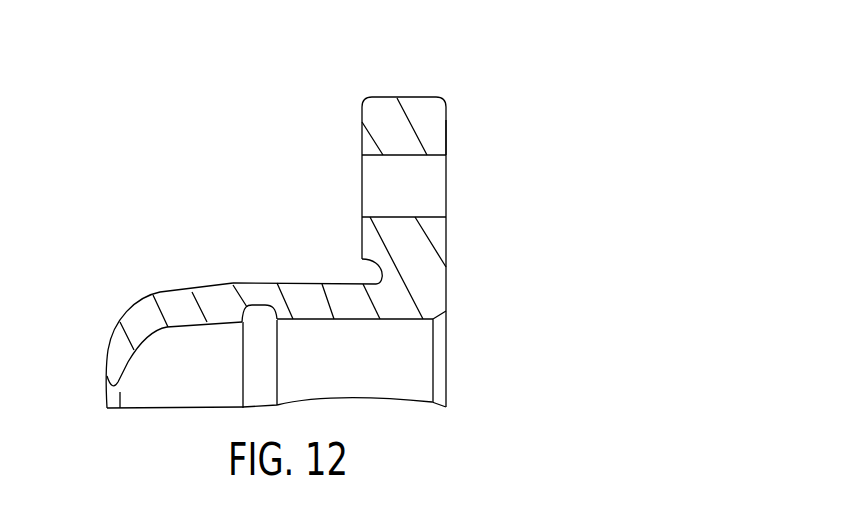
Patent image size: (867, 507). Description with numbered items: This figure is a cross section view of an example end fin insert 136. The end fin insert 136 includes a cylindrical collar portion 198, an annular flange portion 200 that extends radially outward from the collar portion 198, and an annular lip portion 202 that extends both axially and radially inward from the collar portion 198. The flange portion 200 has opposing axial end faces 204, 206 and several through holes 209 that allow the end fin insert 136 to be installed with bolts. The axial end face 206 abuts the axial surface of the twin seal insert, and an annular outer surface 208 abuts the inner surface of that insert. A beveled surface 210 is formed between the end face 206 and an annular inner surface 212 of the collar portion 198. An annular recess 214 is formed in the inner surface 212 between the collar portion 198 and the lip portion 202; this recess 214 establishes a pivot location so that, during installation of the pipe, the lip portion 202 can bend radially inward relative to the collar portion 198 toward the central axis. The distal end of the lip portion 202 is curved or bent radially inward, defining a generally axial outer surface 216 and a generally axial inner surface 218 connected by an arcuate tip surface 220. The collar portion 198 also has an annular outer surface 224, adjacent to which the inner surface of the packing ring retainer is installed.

The end fin insert 136 is at (468, 72).
The cylindrical collar portion 198 is at (320, 260).
The annular flange portion 200 is at (460, 192).
The annular lip portion 202 is at (200, 263).
The axial end face 204 is at (362, 146).
The axial end face 206 is at (447, 140).
The annular outer surface 208 is at (411, 97).
The through holes 209 is at (412, 195).
The beveled surface 210 is at (440, 335).
The annular inner surface 212 is at (350, 320).
The annular recess 214 is at (255, 308).
The axial outer surface 216 is at (160, 293).
The axial inner surface 218 is at (164, 330).
The arcuate tip surface 220 is at (110, 352).
The annular outer surface 224 is at (293, 283).